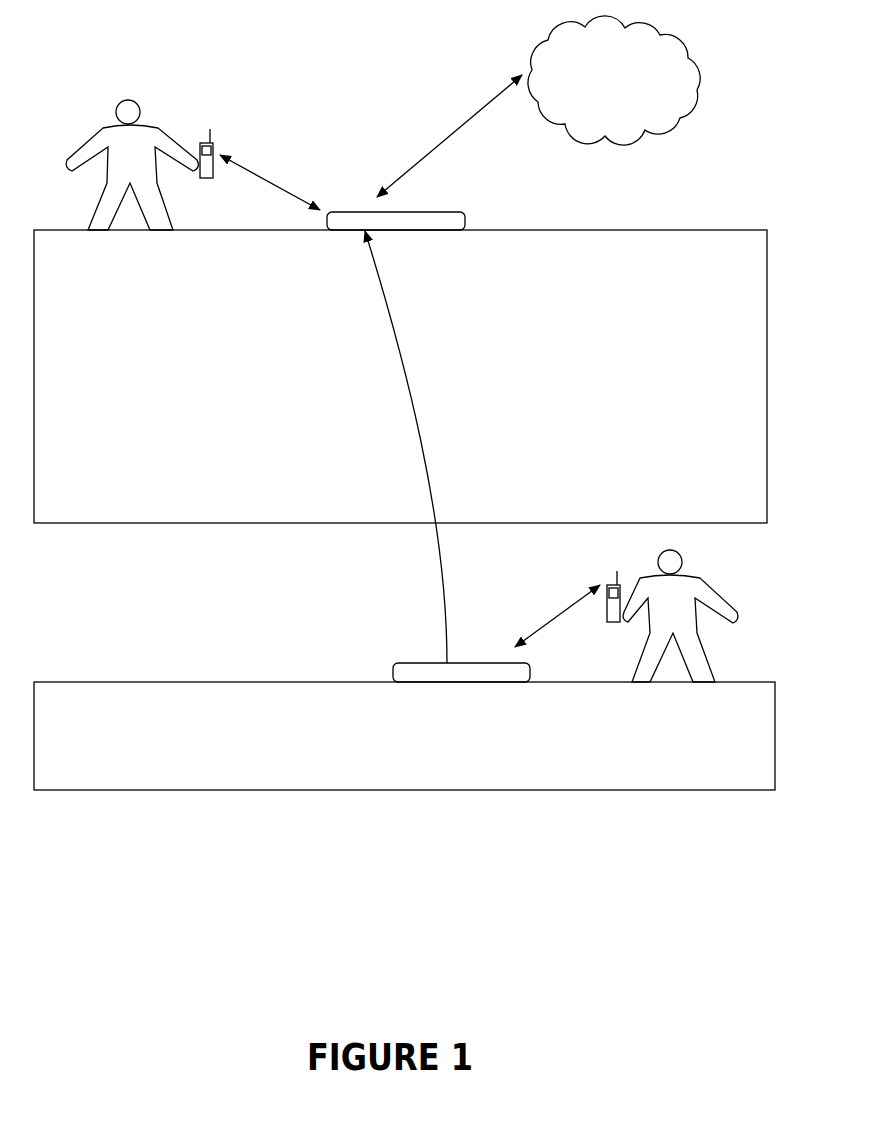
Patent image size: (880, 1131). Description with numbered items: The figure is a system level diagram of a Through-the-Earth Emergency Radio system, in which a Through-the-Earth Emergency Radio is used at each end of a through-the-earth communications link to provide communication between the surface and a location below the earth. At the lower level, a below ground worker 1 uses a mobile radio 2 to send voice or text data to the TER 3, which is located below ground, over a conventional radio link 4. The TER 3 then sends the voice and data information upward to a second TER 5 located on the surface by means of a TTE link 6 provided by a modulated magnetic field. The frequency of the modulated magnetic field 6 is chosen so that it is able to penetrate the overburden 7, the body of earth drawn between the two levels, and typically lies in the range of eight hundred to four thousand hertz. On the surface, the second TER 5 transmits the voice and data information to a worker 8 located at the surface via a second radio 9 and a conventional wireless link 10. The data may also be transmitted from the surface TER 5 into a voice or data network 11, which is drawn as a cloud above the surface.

The below ground worker 1 is at (708, 582).
The mobile radio 2 is at (603, 573).
The TER 3 is at (398, 662).
The conventional radio link 4 is at (560, 608).
The second TER 5 is at (432, 210).
The TTE link 6 is at (393, 355).
The overburden 7 is at (258, 523).
The worker 8 is at (155, 123).
The second radio 9 is at (213, 147).
The conventional wireless link 10 is at (270, 190).
The voice or data network 11 is at (530, 53).